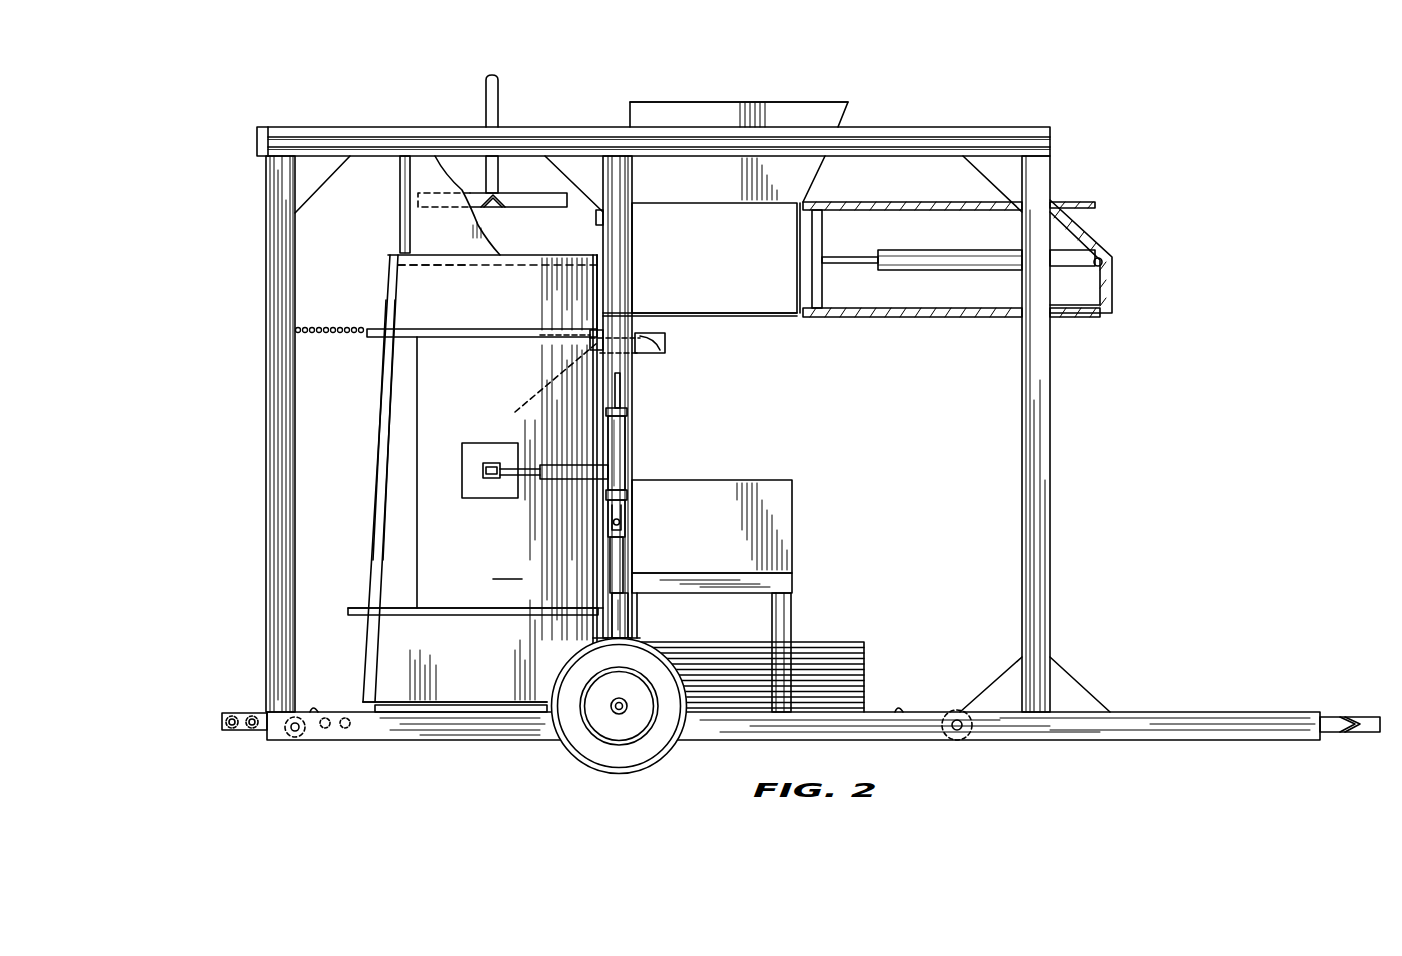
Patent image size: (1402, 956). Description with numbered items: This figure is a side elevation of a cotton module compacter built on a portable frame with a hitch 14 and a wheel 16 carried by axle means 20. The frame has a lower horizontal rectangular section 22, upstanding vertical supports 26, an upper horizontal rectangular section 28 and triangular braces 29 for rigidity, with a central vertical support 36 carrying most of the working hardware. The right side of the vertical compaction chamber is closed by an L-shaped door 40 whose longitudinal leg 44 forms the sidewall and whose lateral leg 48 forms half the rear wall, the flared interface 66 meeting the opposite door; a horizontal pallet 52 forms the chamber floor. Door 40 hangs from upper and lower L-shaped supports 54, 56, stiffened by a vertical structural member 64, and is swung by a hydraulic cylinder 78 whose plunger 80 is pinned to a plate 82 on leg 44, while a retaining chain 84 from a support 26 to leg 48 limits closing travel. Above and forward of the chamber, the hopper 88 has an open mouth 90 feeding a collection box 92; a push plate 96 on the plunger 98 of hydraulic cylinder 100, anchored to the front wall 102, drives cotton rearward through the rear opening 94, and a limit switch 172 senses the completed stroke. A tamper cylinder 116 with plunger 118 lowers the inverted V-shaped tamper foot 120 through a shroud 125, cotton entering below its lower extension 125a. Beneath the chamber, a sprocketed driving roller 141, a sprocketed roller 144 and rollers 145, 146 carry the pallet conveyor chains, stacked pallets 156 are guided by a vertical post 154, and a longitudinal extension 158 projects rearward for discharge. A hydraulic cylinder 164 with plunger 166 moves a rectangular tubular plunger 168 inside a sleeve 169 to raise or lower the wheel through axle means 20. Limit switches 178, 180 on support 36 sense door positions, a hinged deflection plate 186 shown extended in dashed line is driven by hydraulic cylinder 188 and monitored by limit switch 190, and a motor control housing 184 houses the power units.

The hitch 14 is at (1368, 717).
The wheel 16 is at (652, 747).
The axle means 20 is at (617, 708).
The lower horizontal rectangular section 22 is at (1210, 723).
The upstanding vertical supports 26 is at (280, 222).
The upper horizontal rectangular section 28 is at (1000, 133).
The triangular braces 29 is at (310, 160).
The central vertical support 36 is at (618, 173).
The L-shaped door 40 is at (507, 567).
The longitudinal leg 44 is at (490, 692).
The lateral leg 48 is at (382, 543).
The horizontal pallet 52 is at (457, 703).
The upper L-shaped support 54 is at (447, 337).
The lower L-shaped support 56 is at (438, 608).
The structural member 64 is at (417, 418).
The interface 66 is at (380, 453).
The hydraulic cylinder 78 is at (572, 463).
The reciprocal plunger 80 is at (528, 467).
The plate 82 is at (477, 448).
The retaining chain 84 is at (333, 329).
The hopper 88 is at (847, 117).
The top open mouth 90 is at (803, 120).
The collection box 92 is at (733, 290).
The rear opening 94 is at (598, 300).
The push plate 96 is at (820, 247).
The plunger 98 is at (857, 260).
The hydraulic cylinder 100 is at (977, 257).
The front wall 102 is at (1103, 247).
The hydraulic cylinder 116 is at (492, 107).
The plunger 118 is at (493, 185).
The tamper foot 120 is at (492, 209).
The shroud 125 is at (400, 218).
The lower extension 125a is at (432, 265).
The sprocketed driving roller 141 is at (957, 740).
The sprocketed roller 144 is at (290, 738).
The roller 145 is at (345, 729).
The roller 146 is at (325, 729).
The vertical post 154 is at (793, 623).
The horizontal pallets 156 is at (847, 653).
The longitudinal extension 158 is at (228, 713).
The right hydraulic cylinder 164 is at (630, 435).
The vertically reciprocal plunger 166 is at (630, 512).
The rectangular tubular plunger 168 is at (627, 563).
The rectangular tubular sleeve 169 is at (637, 613).
The limit switch 172 is at (597, 218).
The limit switch 178 is at (590, 343).
The second limit switch 180 is at (655, 345).
The motor control housing 184 is at (770, 508).
The hinged deflection plate 186 is at (533, 400).
The hydraulic cylinder 188 is at (665, 340).
The limit switch 190 is at (607, 313).